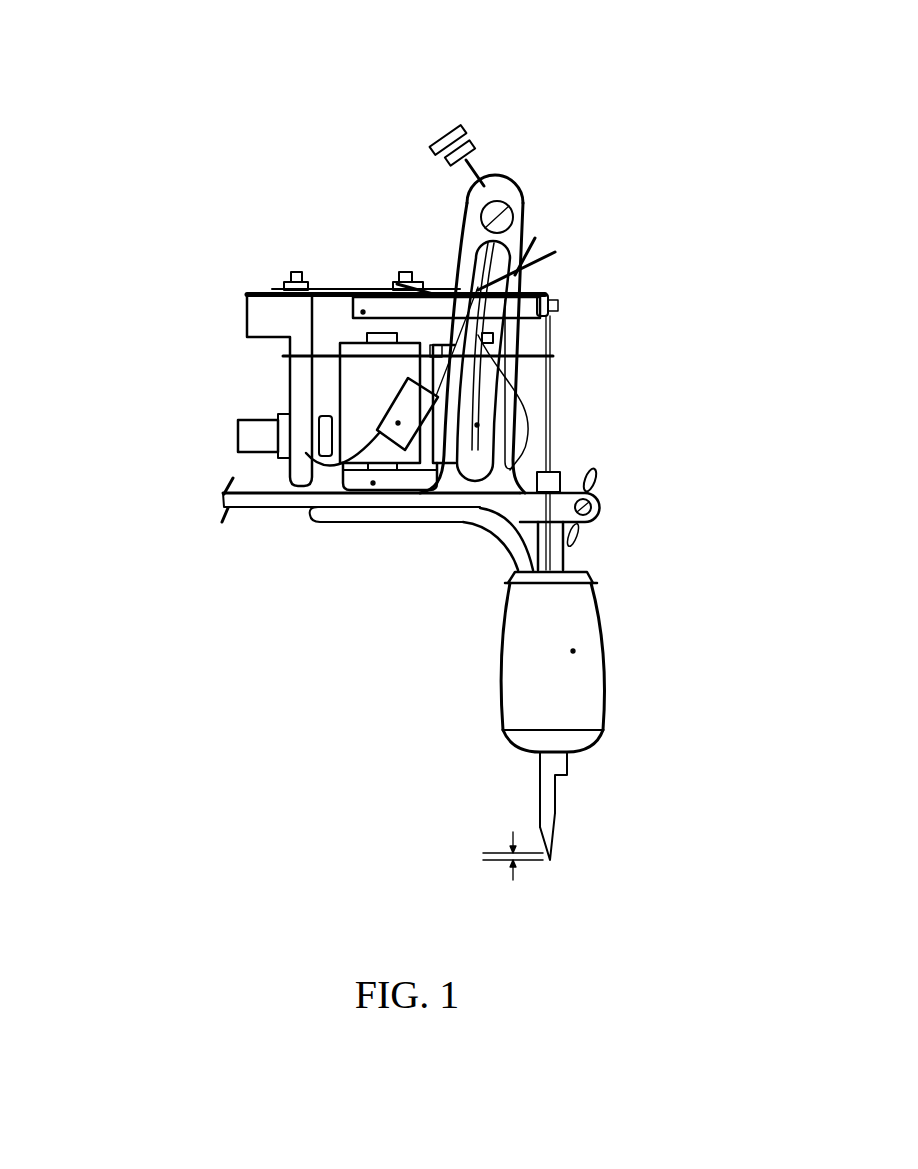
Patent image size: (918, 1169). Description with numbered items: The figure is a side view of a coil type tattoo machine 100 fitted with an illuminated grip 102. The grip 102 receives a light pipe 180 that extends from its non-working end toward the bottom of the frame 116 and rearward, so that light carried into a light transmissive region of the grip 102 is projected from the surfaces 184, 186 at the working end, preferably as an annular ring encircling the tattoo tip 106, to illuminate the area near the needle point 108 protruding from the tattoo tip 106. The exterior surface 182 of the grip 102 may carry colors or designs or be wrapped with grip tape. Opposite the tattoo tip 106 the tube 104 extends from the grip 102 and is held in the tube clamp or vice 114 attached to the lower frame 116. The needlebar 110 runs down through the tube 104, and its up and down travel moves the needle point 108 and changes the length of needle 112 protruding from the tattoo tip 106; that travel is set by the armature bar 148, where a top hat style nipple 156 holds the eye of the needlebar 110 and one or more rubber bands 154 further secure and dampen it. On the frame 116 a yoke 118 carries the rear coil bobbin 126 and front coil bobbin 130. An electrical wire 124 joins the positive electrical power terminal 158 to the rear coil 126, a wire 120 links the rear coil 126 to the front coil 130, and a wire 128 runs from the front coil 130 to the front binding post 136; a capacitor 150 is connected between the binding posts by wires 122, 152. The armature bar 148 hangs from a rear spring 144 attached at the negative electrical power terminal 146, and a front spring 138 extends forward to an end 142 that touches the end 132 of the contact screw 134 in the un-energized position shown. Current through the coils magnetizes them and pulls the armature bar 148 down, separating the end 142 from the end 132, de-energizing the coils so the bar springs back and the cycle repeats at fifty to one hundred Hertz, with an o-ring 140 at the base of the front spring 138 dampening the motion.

The coil type tattoo machine 100 is at (527, 92).
The illuminated grip 102 is at (573, 651).
The tube 104 is at (567, 555).
The tattoo tip 106 is at (557, 827).
The needle point 108 is at (552, 857).
The needlebar 110 is at (553, 447).
The needle 112 is at (512, 833).
The tube clamp or vice 114 is at (597, 477).
The frame 116 is at (450, 513).
The yoke 118 is at (373, 482).
The wire 120 is at (430, 460).
The wire 122 is at (322, 462).
The electrical wire 124 is at (338, 442).
The rear coil bobbin 126 is at (398, 423).
The wire 128 is at (492, 383).
The front coil bobbin 130 is at (477, 425).
The end of the contact screw 132 is at (532, 243).
The contact screw 134 is at (478, 162).
The front binding post 136 is at (501, 207).
The front spring 138 is at (381, 292).
The o-ring 140 is at (425, 290).
The end of the front spring 142 is at (520, 269).
The rear spring 144 is at (340, 292).
The negative electrical power terminal 146 is at (288, 278).
The armature bar 148 is at (363, 312).
The capacitor 150 is at (253, 440).
The wire 152 is at (358, 398).
The rubber band 154 is at (283, 357).
The top hat style nipple 156 is at (558, 305).
The positive electrical power terminal 158 is at (330, 424).
The light pipe 180 is at (227, 499).
The exterior surface 182 is at (603, 702).
The light projecting surface 184 is at (593, 735).
The light projecting surface 186 is at (527, 745).